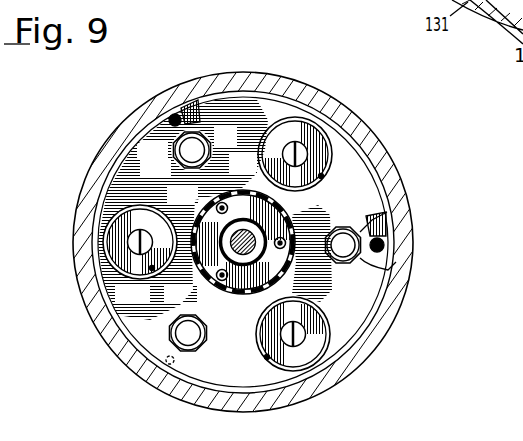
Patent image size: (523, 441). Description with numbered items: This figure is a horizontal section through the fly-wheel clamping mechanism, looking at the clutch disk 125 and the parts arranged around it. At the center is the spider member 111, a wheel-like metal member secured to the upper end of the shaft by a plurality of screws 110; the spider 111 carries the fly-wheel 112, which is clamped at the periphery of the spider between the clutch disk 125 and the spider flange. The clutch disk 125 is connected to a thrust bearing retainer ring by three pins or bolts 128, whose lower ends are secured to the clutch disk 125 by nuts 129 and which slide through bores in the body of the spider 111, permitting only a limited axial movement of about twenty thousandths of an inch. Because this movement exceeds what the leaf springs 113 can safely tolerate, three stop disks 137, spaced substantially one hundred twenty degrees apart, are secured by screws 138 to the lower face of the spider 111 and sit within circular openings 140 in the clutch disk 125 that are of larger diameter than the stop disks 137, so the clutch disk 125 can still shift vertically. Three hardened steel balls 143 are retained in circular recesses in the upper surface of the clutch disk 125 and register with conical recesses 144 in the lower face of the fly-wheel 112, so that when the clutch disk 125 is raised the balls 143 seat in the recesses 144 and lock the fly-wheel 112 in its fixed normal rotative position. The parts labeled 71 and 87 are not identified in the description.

The housing ring 71 is at (127, 132).
The shaft 87 is at (250, 247).
The screws 110 is at (218, 208).
The spider member 111 is at (213, 197).
The fly-wheel 112 is at (381, 261).
The leaf springs 113 is at (259, 192).
The clutch disk 125 is at (118, 183).
The bolts 128 is at (189, 150).
The nuts 129 is at (187, 167).
The stop disks 137 is at (312, 143).
The screws 138 is at (300, 148).
The circular openings 140 is at (323, 176).
The hardened steel balls 143 is at (182, 106).
The conical recesses 144 is at (171, 117).